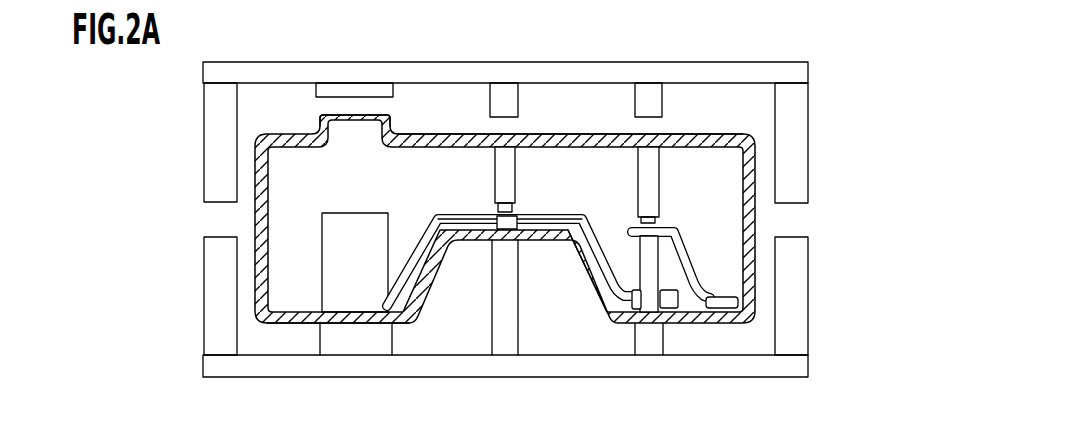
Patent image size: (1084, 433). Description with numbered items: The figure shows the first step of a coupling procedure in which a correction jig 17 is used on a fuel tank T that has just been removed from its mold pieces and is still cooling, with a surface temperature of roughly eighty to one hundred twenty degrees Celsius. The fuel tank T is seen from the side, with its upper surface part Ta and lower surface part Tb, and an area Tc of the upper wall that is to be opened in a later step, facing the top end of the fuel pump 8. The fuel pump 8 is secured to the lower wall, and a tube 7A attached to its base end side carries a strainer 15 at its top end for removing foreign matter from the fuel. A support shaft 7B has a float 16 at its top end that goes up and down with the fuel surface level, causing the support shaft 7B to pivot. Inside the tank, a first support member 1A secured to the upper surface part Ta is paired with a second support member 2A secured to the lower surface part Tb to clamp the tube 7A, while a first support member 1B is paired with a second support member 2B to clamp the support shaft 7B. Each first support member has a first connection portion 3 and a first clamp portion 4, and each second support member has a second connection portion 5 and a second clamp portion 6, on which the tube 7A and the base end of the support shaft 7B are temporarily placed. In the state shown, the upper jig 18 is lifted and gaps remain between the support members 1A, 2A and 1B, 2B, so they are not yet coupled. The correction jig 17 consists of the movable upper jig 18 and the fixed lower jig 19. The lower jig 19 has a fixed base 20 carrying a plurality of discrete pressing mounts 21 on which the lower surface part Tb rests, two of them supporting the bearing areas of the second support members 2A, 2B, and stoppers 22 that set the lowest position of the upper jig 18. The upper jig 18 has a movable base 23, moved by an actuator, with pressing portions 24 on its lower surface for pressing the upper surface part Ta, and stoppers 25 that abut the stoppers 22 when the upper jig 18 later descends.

The first support member 1A is at (508, 163).
The first support member 1B is at (652, 163).
The second support member 2A is at (500, 224).
The second support member 2B is at (604, 305).
The first connection portion 3 is at (576, 205).
The first clamp portion 4 is at (513, 208).
The second connection portion 5 is at (612, 257).
The second clamp portion 6 is at (517, 225).
The tube 7A is at (445, 217).
The support shaft 7B is at (666, 228).
The fuel pump 8 is at (332, 258).
The strainer 15 is at (677, 316).
The float 16 is at (732, 313).
The correction jig 17 is at (156, 219).
The upper jig 18 is at (184, 182).
The lower jig 19 is at (176, 296).
The fixed base 20 is at (570, 368).
The pressing mounts 21 is at (355, 347).
The stoppers 22 is at (800, 291).
The movable base 23 is at (568, 70).
The pressing portions 24 is at (354, 90).
The stoppers 25 is at (800, 146).
The fuel tank T is at (715, 125).
The upper surface part Ta is at (425, 142).
The lower surface part Tb is at (292, 318).
The opening Tc is at (369, 115).